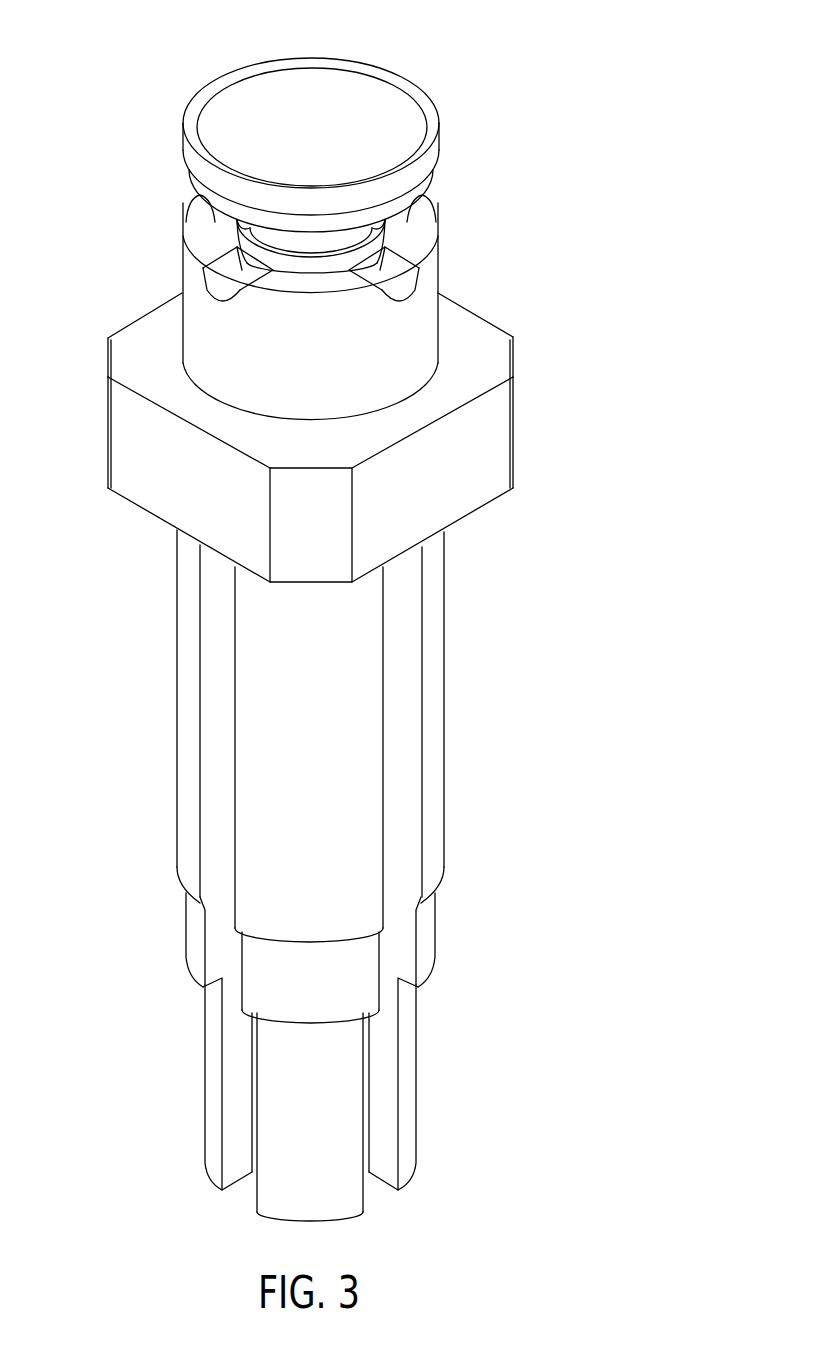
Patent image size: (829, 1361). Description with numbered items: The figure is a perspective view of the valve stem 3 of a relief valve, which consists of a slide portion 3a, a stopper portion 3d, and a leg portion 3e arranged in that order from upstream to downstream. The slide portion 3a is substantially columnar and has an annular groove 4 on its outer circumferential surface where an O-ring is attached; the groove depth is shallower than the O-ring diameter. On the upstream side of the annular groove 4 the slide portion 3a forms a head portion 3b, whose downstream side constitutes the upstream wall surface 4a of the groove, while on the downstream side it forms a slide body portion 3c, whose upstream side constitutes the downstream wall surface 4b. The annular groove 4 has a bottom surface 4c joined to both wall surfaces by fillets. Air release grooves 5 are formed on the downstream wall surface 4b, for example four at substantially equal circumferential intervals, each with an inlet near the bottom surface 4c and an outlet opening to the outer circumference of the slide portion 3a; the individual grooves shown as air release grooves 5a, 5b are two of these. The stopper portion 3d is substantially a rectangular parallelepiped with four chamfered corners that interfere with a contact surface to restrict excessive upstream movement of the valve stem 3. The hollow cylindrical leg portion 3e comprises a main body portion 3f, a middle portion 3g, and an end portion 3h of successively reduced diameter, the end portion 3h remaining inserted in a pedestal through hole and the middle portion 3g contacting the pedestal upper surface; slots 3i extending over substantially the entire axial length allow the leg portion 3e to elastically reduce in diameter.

The valve stem 3 is at (188, 55).
The slide portion 3a is at (440, 308).
The head portion 3b is at (440, 160).
The slide body portion 3c is at (443, 327).
The stopper portion 3d is at (517, 423).
The leg portion 3e is at (462, 740).
The main body portion 3f is at (177, 720).
The middle portion 3g is at (185, 927).
The end portion 3h is at (205, 1083).
The slots 3i is at (222, 635).
The annular groove 4 is at (408, 230).
The upstream wall surface 4a is at (187, 213).
The downstream wall surface 4b is at (322, 289).
The bottom surface 4c is at (290, 242).
The air release grooves 5 is at (305, 271).
The left claw 5a is at (223, 277).
The right claw 5b is at (388, 277).